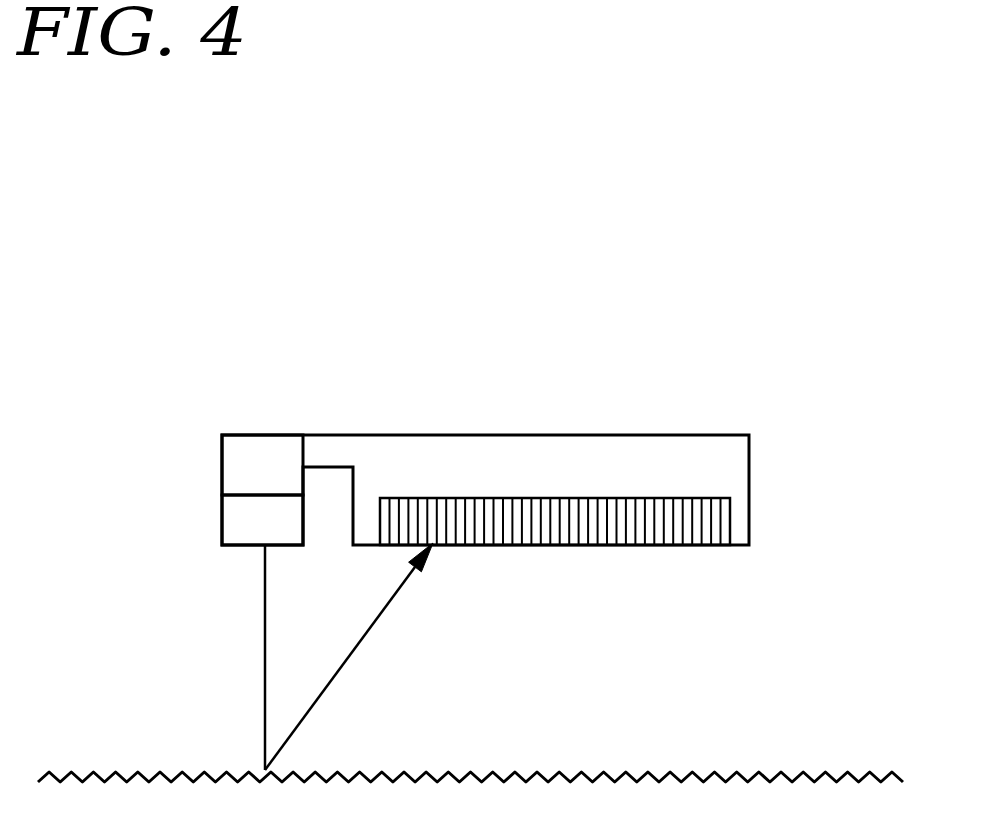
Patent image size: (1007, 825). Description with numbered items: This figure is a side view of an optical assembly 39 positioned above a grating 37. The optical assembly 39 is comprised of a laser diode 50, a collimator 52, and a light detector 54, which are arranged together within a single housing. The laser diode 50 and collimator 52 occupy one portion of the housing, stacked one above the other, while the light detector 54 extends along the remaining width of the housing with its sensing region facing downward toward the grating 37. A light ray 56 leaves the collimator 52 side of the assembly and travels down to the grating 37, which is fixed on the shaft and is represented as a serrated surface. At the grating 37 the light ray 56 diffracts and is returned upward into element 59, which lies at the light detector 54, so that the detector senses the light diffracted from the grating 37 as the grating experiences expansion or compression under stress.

The optical assembly 39 is at (533, 435).
The laser diode 50 is at (276, 483).
The collimator 52 is at (276, 535).
The light detector 54 is at (508, 483).
The light ray 56 is at (236, 657).
The element 59 is at (435, 547).
The grating 37 is at (412, 772).